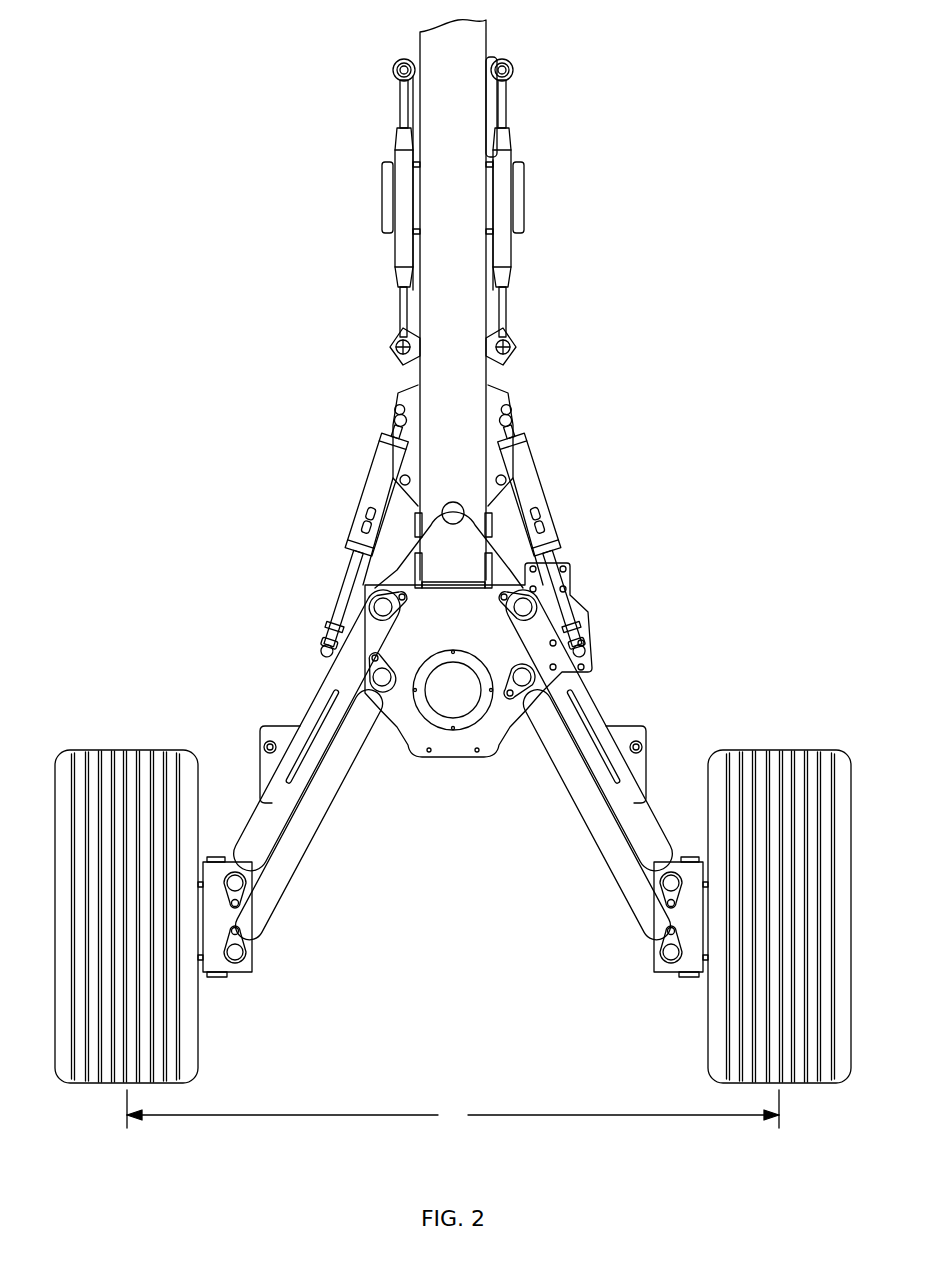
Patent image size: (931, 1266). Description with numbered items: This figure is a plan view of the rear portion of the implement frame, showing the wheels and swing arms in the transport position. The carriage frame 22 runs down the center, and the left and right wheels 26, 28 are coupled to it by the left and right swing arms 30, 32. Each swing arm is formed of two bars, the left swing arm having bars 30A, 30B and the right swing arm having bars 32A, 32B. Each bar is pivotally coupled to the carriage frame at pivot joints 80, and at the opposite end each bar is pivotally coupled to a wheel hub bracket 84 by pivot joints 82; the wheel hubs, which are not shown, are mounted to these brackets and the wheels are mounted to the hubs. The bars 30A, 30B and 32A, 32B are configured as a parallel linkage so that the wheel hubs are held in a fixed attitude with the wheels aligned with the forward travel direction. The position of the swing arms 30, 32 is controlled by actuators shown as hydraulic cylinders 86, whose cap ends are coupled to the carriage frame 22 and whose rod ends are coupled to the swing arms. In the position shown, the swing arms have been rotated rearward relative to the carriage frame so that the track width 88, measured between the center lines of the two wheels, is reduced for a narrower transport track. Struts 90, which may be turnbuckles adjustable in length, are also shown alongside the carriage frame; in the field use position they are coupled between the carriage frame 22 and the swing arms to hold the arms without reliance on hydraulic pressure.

The carriage frame 22 is at (458, 300).
The left wheel 26 is at (105, 758).
The right wheel 28 is at (771, 759).
The left swing arm 30 is at (314, 764).
The bar 30A is at (378, 804).
The bar 30B is at (309, 815).
The right swing arm 32 is at (588, 764).
The bar 32A is at (520, 804).
The bar 32B is at (596, 815).
The pivot joint 80 is at (383, 606).
The pivot joint 82 is at (236, 884).
The wheel hub bracket 84 is at (218, 976).
The hydraulic cylinder 86 is at (378, 472).
The track width 88 is at (453, 1109).
The strut 90 is at (400, 243).